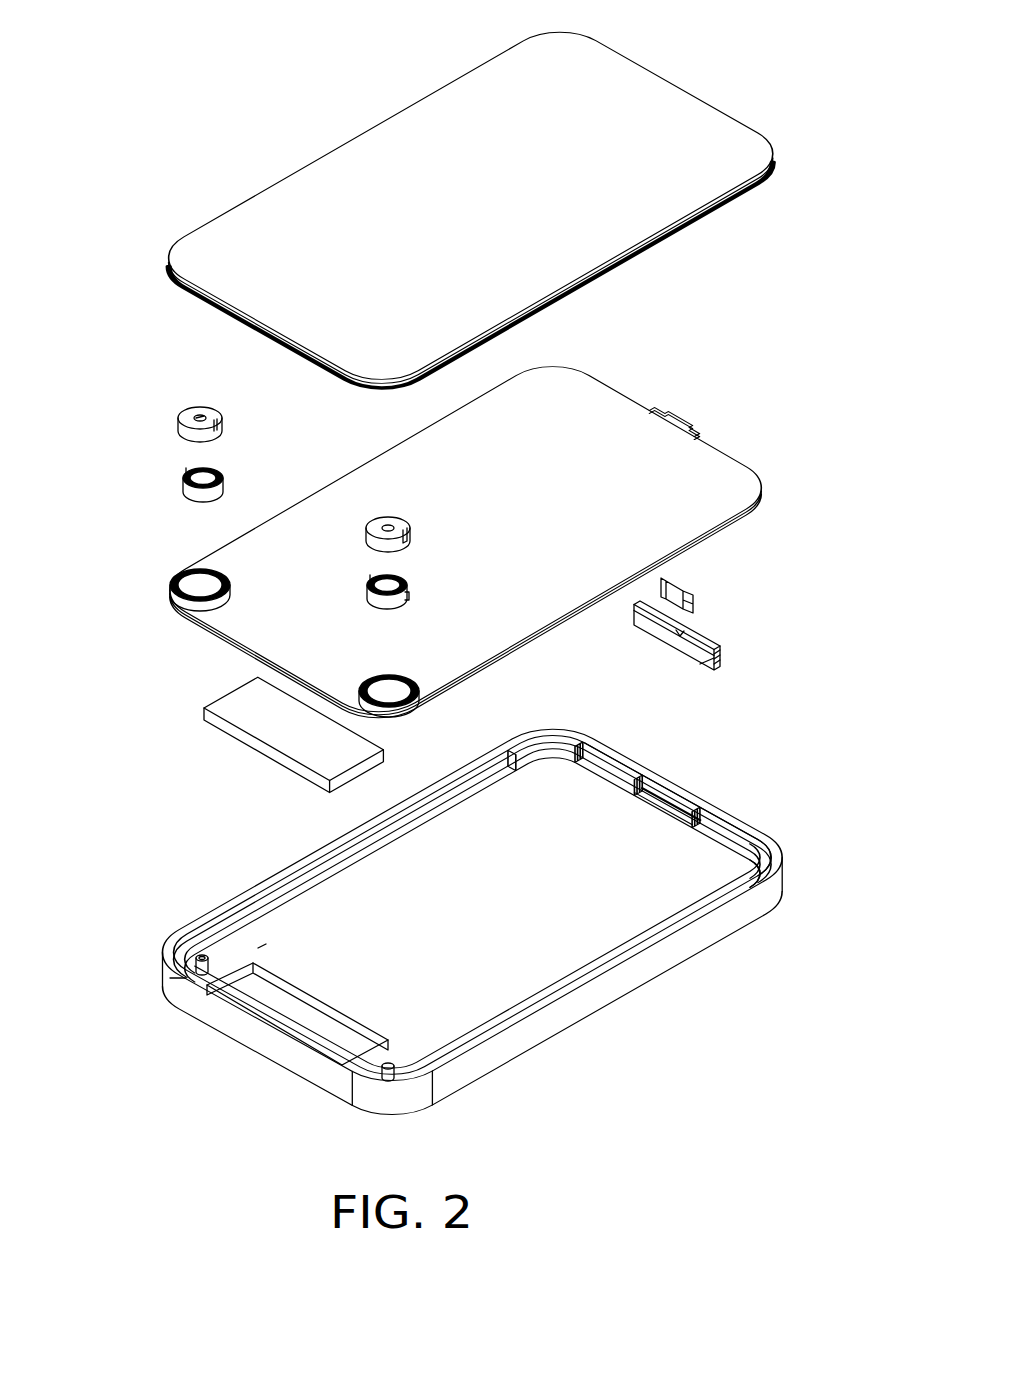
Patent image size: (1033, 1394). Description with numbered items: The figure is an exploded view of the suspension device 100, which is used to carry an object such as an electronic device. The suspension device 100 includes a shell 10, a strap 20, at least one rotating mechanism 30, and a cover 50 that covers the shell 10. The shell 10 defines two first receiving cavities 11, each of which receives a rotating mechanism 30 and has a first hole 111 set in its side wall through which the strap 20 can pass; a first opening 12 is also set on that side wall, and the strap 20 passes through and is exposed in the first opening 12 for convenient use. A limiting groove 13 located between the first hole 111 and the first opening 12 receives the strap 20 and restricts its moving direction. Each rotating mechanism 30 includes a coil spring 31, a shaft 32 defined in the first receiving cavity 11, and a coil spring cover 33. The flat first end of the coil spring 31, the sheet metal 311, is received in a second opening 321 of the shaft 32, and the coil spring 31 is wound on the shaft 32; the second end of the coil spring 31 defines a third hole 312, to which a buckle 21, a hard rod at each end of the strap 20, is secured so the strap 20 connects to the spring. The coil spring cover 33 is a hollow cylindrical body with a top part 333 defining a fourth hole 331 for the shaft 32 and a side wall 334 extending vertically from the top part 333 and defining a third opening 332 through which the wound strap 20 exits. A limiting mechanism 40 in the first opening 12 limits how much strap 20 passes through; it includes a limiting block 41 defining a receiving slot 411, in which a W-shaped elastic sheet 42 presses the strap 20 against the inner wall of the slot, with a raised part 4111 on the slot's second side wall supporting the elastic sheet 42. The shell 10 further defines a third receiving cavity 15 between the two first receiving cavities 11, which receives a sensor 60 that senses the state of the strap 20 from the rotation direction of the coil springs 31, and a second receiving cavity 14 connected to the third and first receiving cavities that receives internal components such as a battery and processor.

The suspension device 100 is at (652, 53).
The cover 50 is at (717, 115).
The strap 20 is at (723, 457).
The buckle 21 is at (188, 606).
The rotating mechanism 30 is at (133, 370).
The coil spring cover 33 is at (170, 419).
The fourth hole 331 is at (206, 417).
The third opening 332 is at (408, 538).
The top part 333 is at (195, 407).
The side wall 334 is at (219, 428).
The coil spring 31 is at (184, 478).
The sheet metal 311 is at (214, 470).
The third hole 312 is at (412, 597).
The limiting mechanism 40 is at (788, 577).
The limiting block 41 is at (712, 636).
The receiving slot 411 is at (712, 663).
The raised part 4111 is at (674, 641).
The elastic sheet 42 is at (700, 596).
The sensor 60 is at (274, 730).
The shell 10 is at (742, 911).
The first receiving cavity 11 is at (290, 1027).
The first hole 111 is at (204, 948).
The first opening 12 is at (690, 789).
The limiting groove 13 is at (773, 845).
The second receiving cavity 14 is at (540, 972).
The third receiving cavity 15 is at (337, 1032).
The shaft 32 is at (200, 950).
The second opening 321 is at (262, 944).